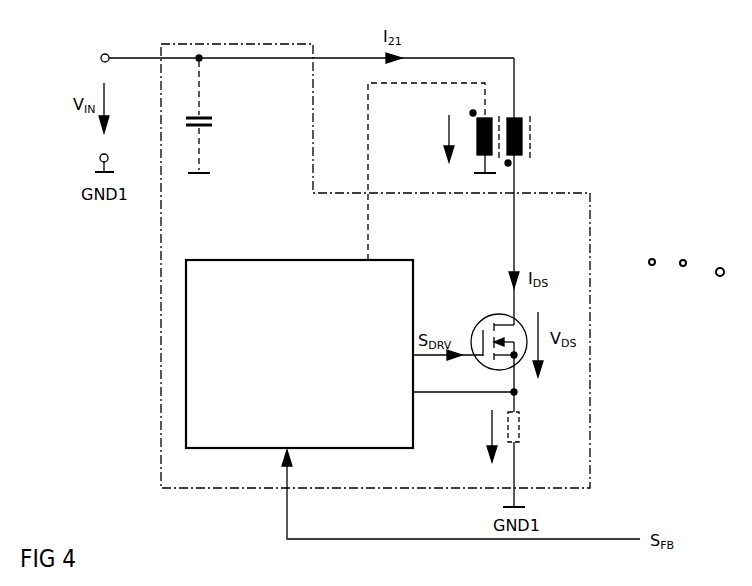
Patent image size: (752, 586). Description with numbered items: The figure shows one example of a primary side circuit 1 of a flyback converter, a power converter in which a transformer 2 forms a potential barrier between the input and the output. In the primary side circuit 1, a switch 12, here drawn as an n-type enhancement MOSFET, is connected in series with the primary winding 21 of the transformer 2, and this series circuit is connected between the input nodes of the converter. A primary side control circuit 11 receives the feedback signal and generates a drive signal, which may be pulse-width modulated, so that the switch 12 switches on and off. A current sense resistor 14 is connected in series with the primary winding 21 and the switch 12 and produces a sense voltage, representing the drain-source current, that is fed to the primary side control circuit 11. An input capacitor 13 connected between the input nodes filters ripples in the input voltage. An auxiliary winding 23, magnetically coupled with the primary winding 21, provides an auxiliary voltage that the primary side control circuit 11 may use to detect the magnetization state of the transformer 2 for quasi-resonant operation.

The primary side circuit 1 is at (270, 43).
The transformer 2 is at (505, 46).
The primary winding 21 is at (523, 121).
The auxiliary winding 23 is at (478, 150).
The primary side control circuit 11 is at (265, 259).
The switch 12 is at (475, 318).
The input capacitor 13 is at (215, 122).
The current sense resistor 14 is at (522, 432).